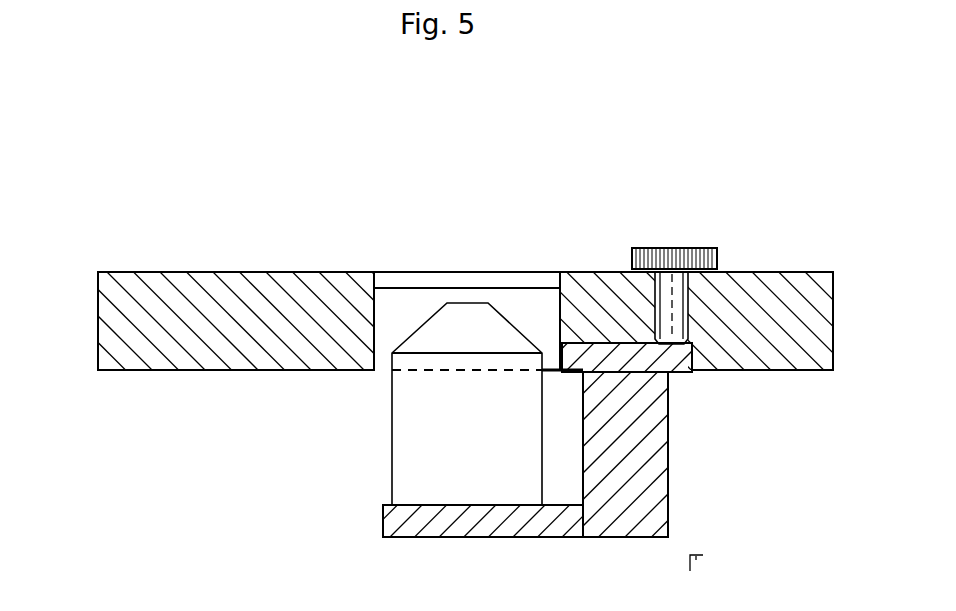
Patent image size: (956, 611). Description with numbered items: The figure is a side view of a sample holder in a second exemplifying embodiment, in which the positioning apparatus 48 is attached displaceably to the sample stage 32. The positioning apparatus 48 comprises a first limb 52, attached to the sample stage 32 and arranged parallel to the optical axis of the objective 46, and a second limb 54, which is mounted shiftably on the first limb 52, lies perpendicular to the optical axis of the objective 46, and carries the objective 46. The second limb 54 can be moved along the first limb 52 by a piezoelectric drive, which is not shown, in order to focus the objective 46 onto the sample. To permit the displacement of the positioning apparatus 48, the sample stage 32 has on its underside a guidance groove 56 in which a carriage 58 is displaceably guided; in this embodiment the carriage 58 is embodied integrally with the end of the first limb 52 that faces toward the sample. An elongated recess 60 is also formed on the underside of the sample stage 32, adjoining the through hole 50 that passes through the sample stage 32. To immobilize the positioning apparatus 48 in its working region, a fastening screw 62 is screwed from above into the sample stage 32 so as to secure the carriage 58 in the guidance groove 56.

The sample stage 32 is at (98, 306).
The through hole 50 is at (393, 307).
The fastening screw 62 is at (685, 247).
The elongated recess 60 is at (382, 374).
The objective 46 is at (401, 448).
The carriage 58 is at (578, 373).
The guidance groove 56 is at (690, 375).
The first limb 52 is at (664, 515).
The second limb 54 is at (522, 540).
The positioning apparatus 48 is at (700, 568).